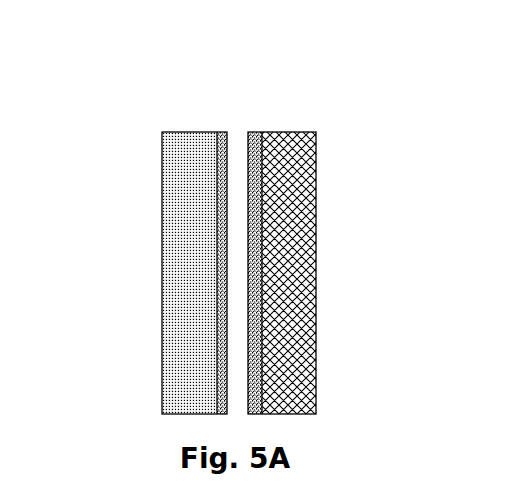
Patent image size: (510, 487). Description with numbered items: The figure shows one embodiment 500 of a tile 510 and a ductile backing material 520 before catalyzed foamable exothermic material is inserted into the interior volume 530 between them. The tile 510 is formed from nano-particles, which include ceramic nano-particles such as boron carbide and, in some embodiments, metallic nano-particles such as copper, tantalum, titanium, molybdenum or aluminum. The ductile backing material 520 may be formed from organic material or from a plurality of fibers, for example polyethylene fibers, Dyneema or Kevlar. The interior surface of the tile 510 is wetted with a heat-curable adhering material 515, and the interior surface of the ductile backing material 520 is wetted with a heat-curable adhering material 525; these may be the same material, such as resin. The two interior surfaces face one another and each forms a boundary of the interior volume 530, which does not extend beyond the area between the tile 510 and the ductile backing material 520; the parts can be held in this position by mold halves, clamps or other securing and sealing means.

The embodiment 500 is at (97, 66).
The tile 510 is at (172, 181).
The heat-curable adhering material 515 is at (220, 132).
The ductile backing material 520 is at (308, 177).
The heat-curable adhering material 525 is at (258, 132).
The interior volume 530 is at (238, 207).